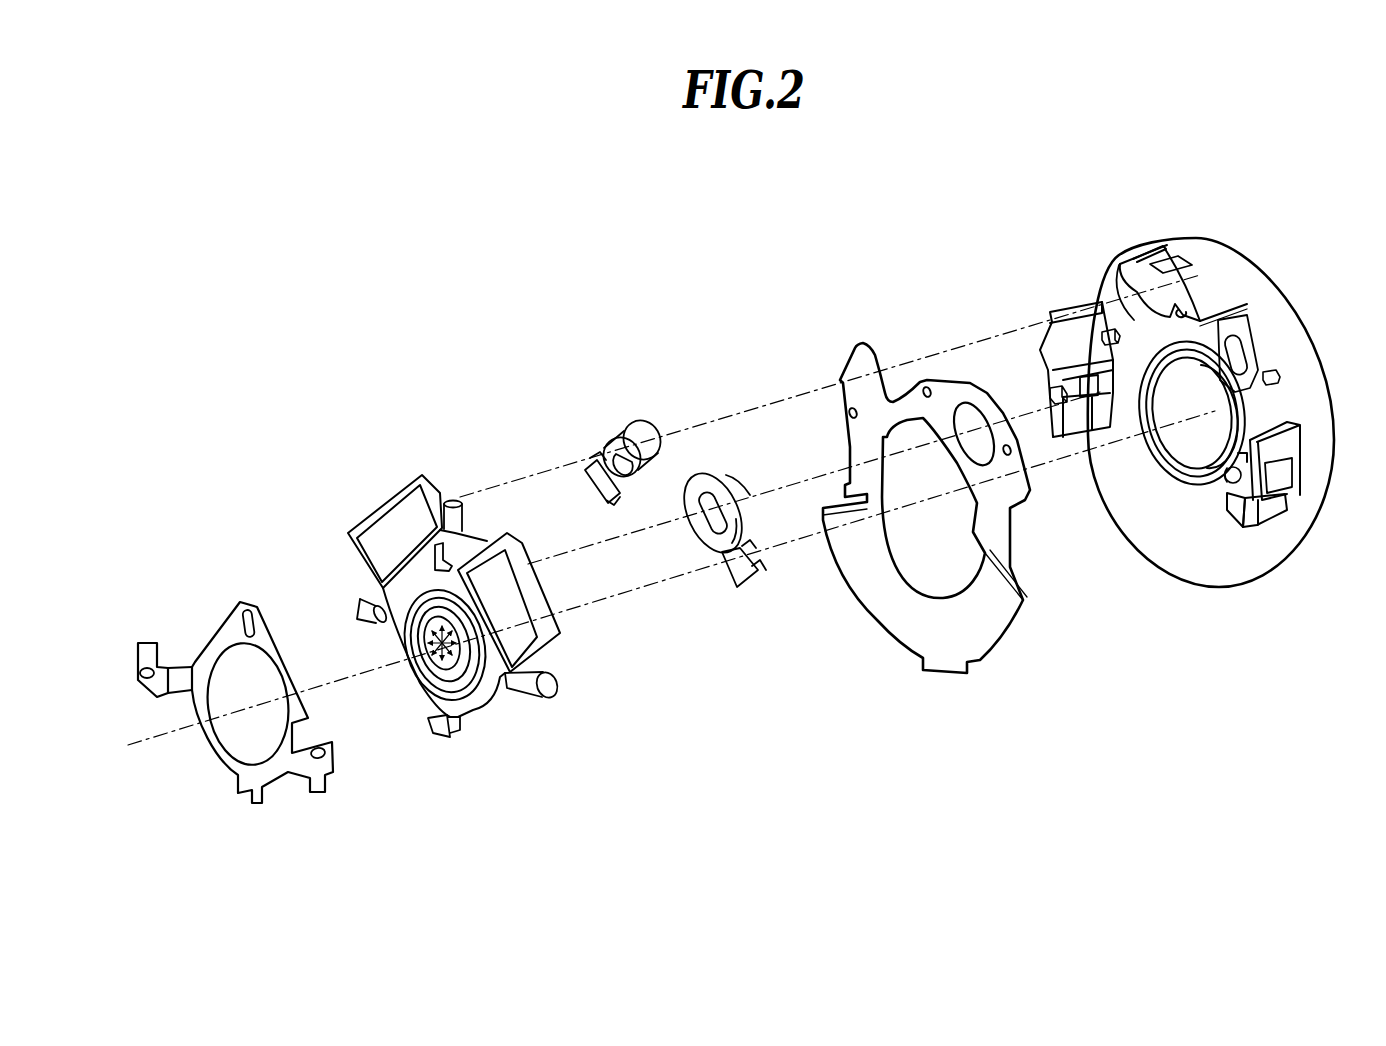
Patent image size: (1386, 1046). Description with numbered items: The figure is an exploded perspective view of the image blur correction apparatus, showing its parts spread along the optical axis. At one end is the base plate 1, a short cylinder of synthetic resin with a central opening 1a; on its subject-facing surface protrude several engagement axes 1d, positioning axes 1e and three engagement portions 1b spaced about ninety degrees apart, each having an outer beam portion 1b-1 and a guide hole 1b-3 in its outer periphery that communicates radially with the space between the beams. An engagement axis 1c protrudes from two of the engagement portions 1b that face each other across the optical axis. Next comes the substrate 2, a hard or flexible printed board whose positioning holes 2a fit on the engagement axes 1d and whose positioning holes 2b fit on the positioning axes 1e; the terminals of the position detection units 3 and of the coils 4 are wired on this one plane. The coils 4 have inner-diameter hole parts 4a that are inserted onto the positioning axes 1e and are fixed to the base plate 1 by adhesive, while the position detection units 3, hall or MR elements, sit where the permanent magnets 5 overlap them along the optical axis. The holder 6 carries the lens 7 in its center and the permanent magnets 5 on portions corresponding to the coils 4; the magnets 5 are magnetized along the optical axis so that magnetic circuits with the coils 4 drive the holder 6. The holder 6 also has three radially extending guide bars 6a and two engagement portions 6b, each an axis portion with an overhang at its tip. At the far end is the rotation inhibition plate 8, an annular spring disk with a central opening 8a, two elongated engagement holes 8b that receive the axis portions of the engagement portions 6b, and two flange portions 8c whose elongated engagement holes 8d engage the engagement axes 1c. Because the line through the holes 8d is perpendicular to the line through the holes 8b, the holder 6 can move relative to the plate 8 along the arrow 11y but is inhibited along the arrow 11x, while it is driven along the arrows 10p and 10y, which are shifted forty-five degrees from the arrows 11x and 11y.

The base plate 1 is at (1259, 283).
The opening 1a is at (1173, 485).
The engagement portions 1b is at (1124, 262).
The beam portion 1b-1 is at (1199, 279).
The guide holes 1b-3 is at (1169, 253).
The engagement axis 1c is at (1050, 392).
The engagement axes 1d is at (1120, 339).
The positioning axes 1e is at (1137, 290).
The substrate 2 is at (1008, 613).
The positioning holes 2a is at (1003, 450).
The positioning holes 2b is at (955, 400).
The position detection units 3 is at (590, 500).
The coils 4 is at (713, 477).
The inner-diameter hole parts 4a is at (613, 448).
The permanent magnets 5 is at (400, 500).
The holder 6 is at (490, 700).
The guide bars 6a is at (443, 517).
The engagement portions 6b is at (470, 510).
The lens 7 is at (445, 680).
The rotation inhibition plate 8 is at (240, 600).
The opening 8a is at (211, 655).
The engagement holes 8b is at (253, 773).
The flange portions 8c is at (145, 648).
The engagement holes 8d is at (145, 683).
The arrow 10p is at (423, 633).
The arrow 10y is at (452, 627).
The arrow 11x is at (445, 643).
The arrow 11y is at (420, 680).